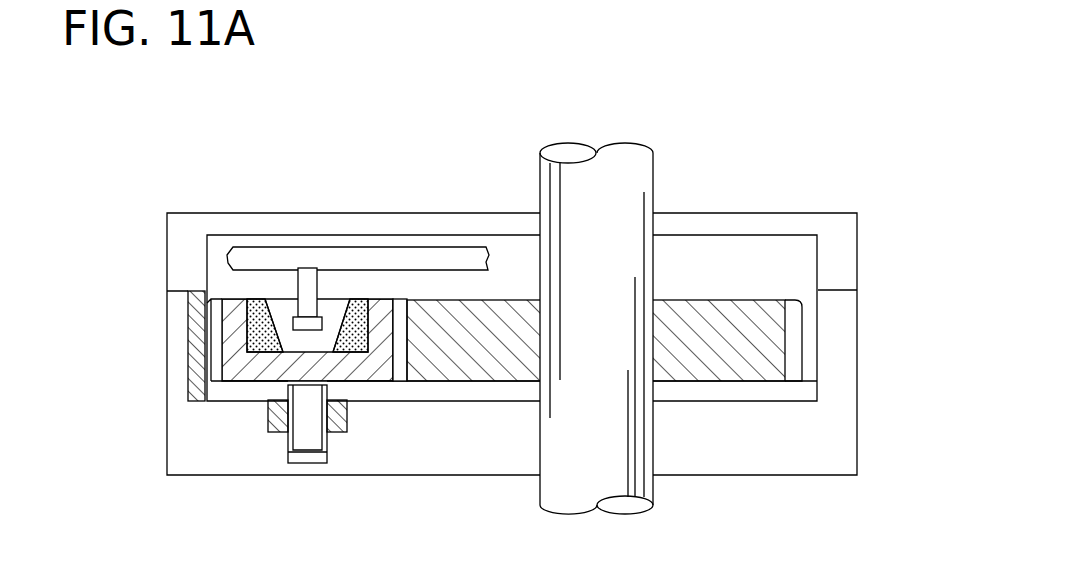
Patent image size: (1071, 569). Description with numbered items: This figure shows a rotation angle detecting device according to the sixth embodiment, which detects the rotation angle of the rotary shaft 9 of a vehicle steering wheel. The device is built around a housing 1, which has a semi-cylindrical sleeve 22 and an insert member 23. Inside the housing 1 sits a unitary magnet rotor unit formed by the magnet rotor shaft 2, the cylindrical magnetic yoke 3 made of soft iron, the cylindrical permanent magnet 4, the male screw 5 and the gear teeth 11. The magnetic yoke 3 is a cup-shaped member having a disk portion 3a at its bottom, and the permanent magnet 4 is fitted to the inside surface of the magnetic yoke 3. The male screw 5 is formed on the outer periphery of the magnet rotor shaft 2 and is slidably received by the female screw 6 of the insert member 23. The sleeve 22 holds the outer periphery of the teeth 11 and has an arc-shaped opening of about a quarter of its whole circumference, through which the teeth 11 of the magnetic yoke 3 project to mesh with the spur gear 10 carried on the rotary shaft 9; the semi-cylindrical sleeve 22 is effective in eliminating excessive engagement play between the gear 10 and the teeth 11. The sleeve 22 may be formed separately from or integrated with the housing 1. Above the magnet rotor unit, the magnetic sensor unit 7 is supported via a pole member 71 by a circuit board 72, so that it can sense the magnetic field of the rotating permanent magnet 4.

The housing 1 is at (218, 453).
The magnet rotor shaft 2 is at (308, 440).
The magnetic yoke 3 is at (272, 349).
The disk portion 3a is at (368, 368).
The permanent magnet 4 is at (352, 308).
The male screw 5 is at (327, 442).
The female screw 6 is at (282, 431).
The magnetic sensor unit 7 is at (285, 317).
The rotary shaft 9 is at (635, 177).
The spur gear 10 is at (738, 365).
The gear teeth 11 is at (398, 313).
The semi-cylindrical sleeve 22 is at (197, 358).
The insert member 23 is at (347, 421).
The pole member 71 is at (318, 283).
The circuit board 72 is at (233, 257).